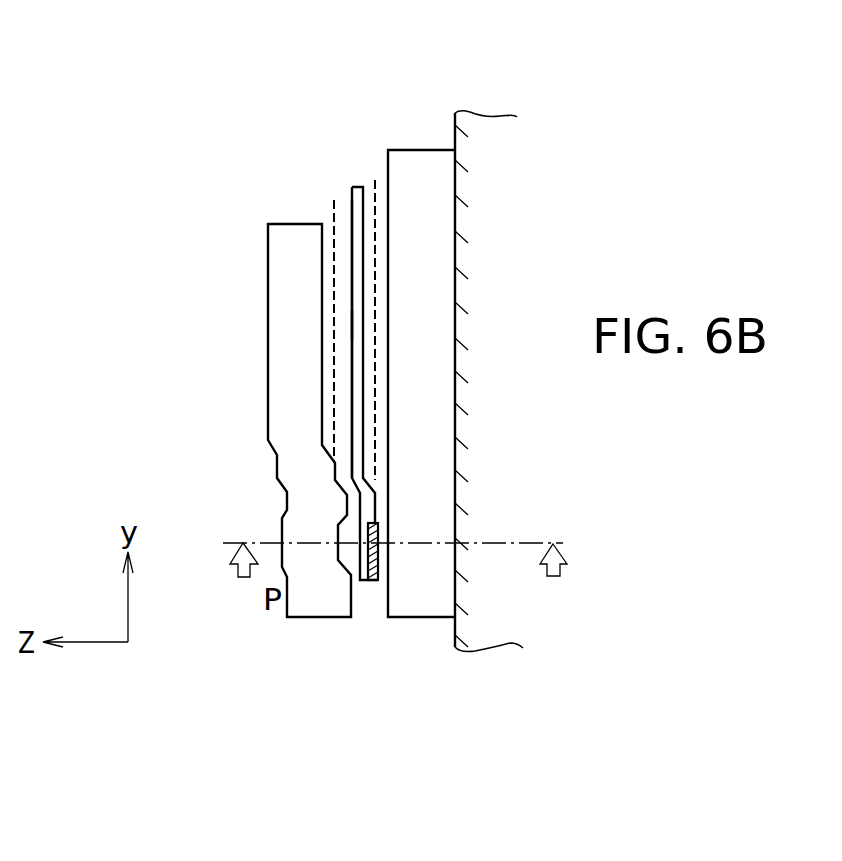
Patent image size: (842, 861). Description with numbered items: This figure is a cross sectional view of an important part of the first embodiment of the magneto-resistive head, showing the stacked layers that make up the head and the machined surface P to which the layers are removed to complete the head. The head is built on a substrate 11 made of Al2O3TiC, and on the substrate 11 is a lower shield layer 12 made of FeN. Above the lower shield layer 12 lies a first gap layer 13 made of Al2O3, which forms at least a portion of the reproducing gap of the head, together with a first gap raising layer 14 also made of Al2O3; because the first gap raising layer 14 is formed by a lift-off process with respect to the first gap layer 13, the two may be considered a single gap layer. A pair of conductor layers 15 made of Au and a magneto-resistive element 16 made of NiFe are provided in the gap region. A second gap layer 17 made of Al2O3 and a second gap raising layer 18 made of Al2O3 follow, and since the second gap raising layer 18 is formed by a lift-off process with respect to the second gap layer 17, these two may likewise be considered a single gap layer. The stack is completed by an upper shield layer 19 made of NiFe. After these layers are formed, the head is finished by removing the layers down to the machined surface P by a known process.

The substrate 11 is at (497, 135).
The lower shield layer 12 is at (440, 225).
The first gap layer 13 is at (375, 180).
The first gap raising layer 14 is at (363, 185).
The conductor layers 15 is at (358, 325).
The magneto-resistive element 16 is at (372, 582).
The second gap layer 17 is at (343, 203).
The second gap raising layer 18 is at (327, 223).
The upper shield layer 19 is at (290, 238).